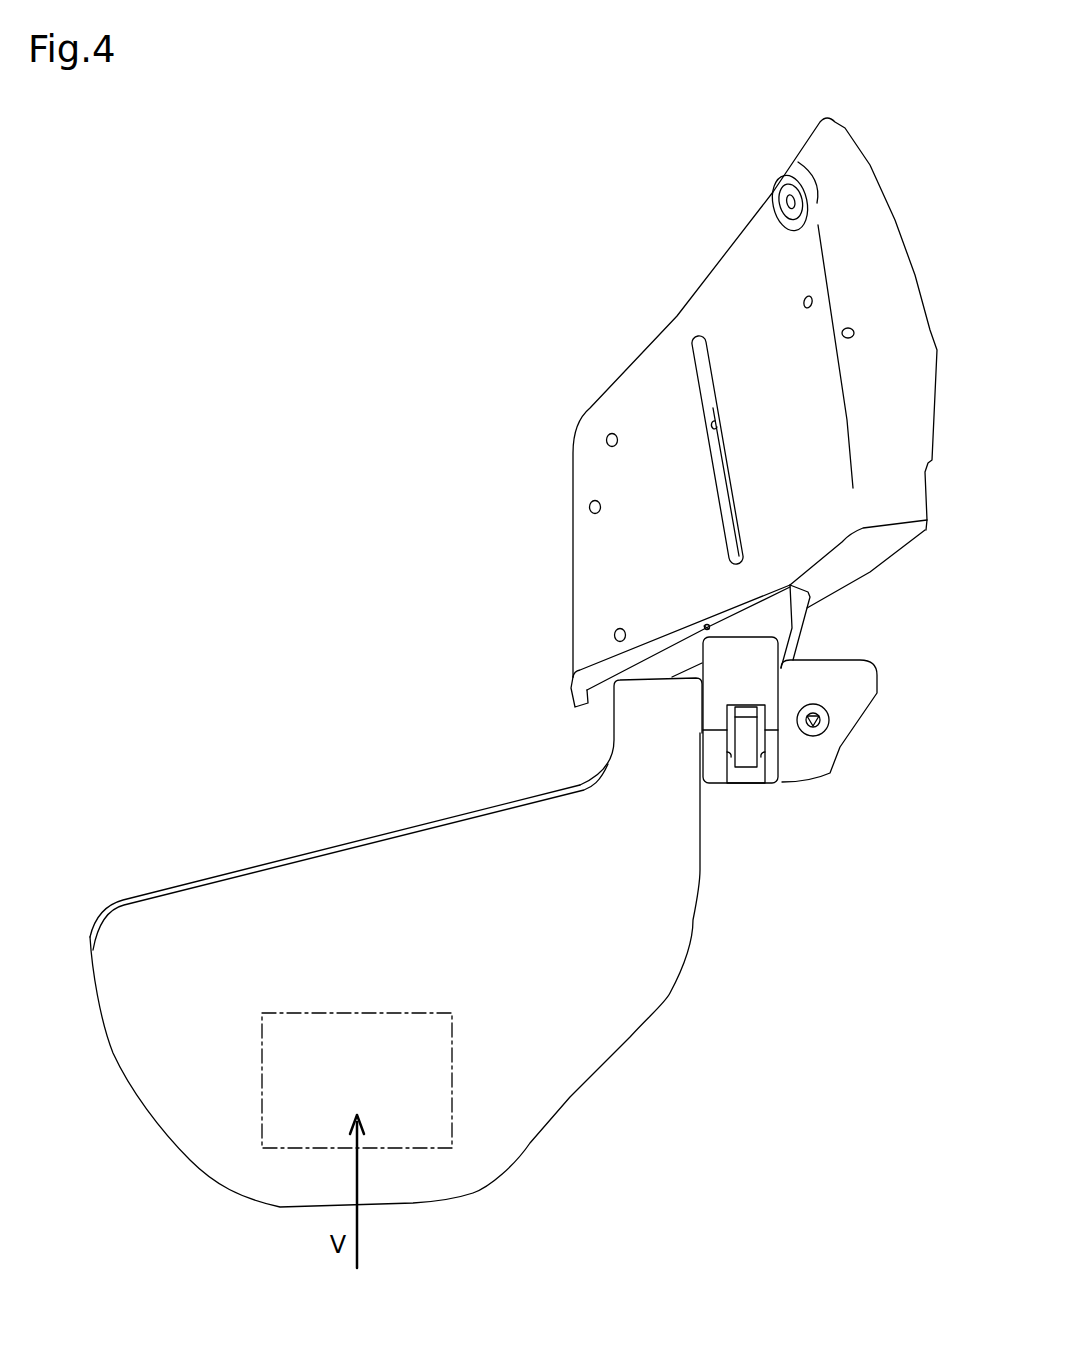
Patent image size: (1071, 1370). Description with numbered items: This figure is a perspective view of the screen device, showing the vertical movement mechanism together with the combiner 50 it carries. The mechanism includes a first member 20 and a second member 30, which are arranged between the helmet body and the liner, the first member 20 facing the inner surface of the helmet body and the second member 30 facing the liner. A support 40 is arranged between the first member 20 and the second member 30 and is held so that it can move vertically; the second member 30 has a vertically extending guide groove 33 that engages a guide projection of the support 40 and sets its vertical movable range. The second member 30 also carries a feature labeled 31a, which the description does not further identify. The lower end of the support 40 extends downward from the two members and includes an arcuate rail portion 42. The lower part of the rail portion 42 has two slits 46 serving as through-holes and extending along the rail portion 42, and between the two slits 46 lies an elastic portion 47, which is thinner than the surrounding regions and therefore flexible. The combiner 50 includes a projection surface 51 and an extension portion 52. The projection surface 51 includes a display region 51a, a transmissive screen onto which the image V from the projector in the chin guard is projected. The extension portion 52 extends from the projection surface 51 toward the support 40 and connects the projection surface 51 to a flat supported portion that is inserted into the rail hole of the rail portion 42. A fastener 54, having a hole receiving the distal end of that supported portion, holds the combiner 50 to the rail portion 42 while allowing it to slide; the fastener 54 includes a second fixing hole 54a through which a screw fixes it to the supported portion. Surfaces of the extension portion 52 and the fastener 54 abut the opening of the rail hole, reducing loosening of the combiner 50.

The first member 20 is at (858, 603).
The second member 30 is at (572, 470).
The boss hole 31a is at (790, 203).
The guide groove 33 is at (693, 350).
The support 40 is at (705, 612).
The rail portion 42 is at (763, 678).
The slits 46 is at (727, 773).
The elastic portion 47 is at (745, 768).
The combiner 50 is at (155, 882).
The projection surface 51 is at (538, 1107).
The display region 51a is at (407, 1012).
The extension portion 52 is at (615, 722).
The fastener 54 is at (877, 694).
The second fixing hole 54a is at (815, 737).